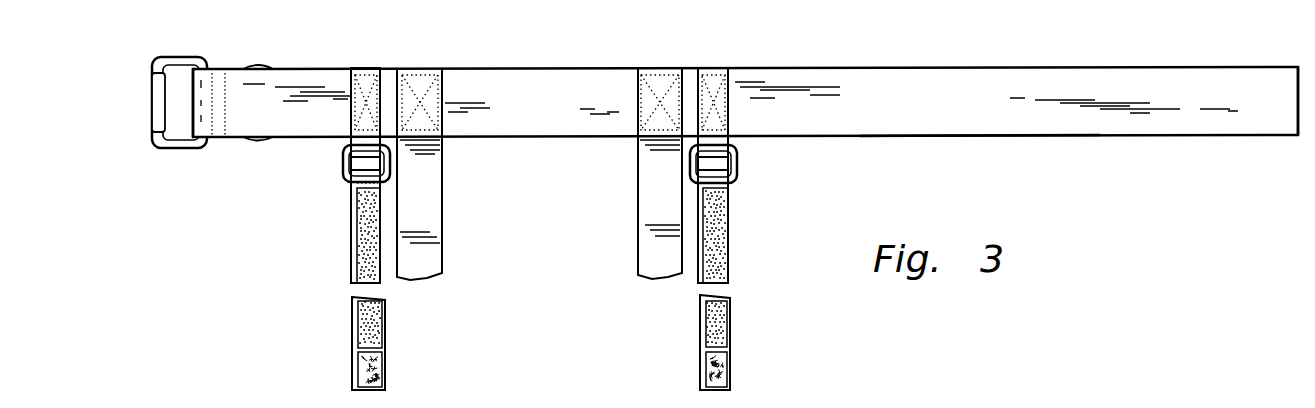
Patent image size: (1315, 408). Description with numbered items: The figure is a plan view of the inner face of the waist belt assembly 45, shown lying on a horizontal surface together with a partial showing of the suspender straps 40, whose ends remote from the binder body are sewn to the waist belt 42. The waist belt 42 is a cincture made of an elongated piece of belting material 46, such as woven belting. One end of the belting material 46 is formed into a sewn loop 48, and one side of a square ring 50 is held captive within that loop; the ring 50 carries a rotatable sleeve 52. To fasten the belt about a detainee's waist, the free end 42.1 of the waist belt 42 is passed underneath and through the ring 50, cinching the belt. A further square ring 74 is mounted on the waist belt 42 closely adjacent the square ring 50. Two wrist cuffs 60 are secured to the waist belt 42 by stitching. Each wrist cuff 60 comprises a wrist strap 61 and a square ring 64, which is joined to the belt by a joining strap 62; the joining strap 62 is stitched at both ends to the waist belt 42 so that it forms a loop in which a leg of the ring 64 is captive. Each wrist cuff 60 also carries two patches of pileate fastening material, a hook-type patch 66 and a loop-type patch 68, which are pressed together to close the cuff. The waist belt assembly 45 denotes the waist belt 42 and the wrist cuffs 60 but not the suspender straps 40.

The suspender strap 40 is at (425, 256).
The waist belt 42 is at (941, 60).
The free end 42.1 is at (1277, 110).
The waist belt assembly 45 is at (590, 48).
The belting material 46 is at (943, 126).
The sewn loop 48 is at (200, 85).
The square ring 50 is at (184, 151).
The rotatable sleeve 52 is at (157, 117).
The wrist cuff 60 is at (326, 268).
The wrist strap 61 is at (386, 345).
The joining strap 62 is at (358, 142).
The square ring 64 is at (344, 176).
The patch of pileate fastening material 66 is at (365, 368).
The patch of pileate fastening material 68 is at (362, 238).
The square ring 74 is at (262, 66).